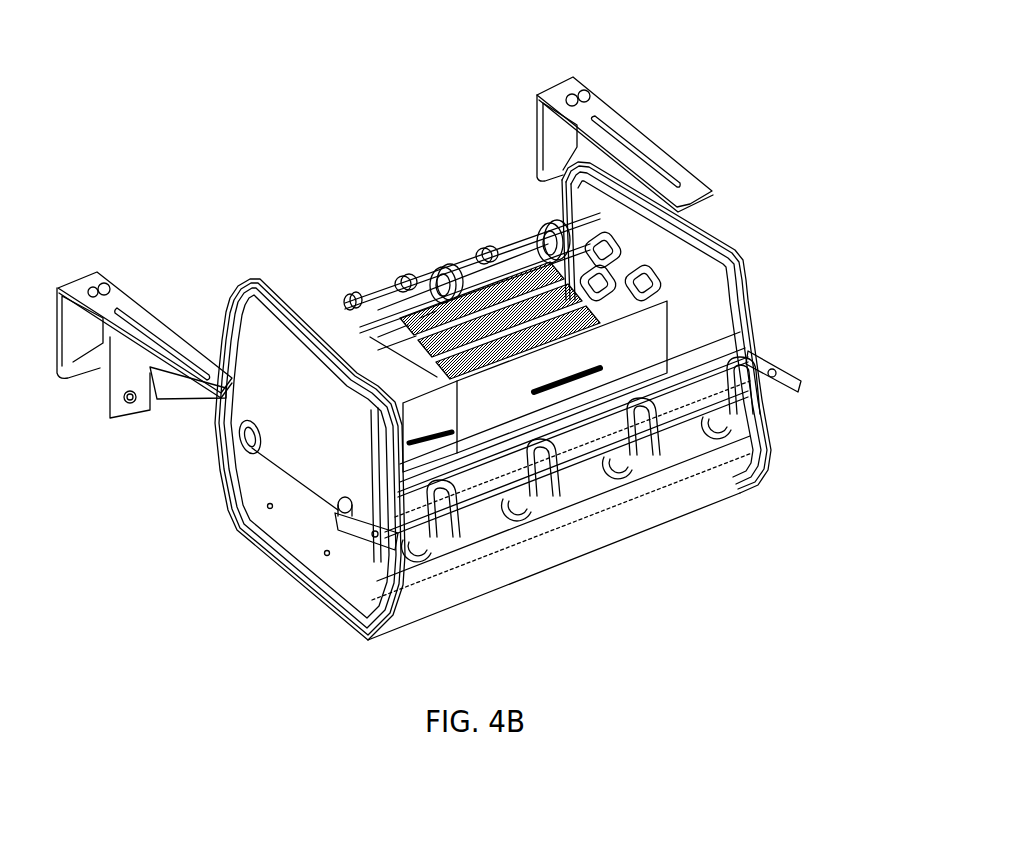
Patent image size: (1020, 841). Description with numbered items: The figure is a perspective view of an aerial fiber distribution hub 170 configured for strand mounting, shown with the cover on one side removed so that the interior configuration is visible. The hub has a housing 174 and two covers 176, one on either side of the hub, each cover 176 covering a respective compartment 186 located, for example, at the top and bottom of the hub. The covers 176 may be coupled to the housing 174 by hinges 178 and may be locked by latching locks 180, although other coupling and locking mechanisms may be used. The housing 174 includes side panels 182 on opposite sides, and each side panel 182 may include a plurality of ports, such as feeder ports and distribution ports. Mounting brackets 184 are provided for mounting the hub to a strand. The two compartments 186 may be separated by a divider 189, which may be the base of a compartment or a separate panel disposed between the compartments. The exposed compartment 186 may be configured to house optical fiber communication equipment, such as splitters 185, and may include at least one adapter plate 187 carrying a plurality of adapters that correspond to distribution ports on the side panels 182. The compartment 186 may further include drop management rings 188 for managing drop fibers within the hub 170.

The aerial fiber distribution hub 170 is at (284, 108).
The housing 174 is at (239, 283).
The cover 176 is at (677, 507).
The hinge 178 is at (378, 292).
The latching lock 180 is at (462, 513).
The side panel 182 is at (678, 281).
The mounting bracket 184 is at (545, 92).
The splitter 185 is at (340, 324).
The compartment 186 is at (570, 260).
The adapter plate 187 is at (428, 312).
The drop management ring 188 is at (552, 228).
The divider 189 is at (690, 338).